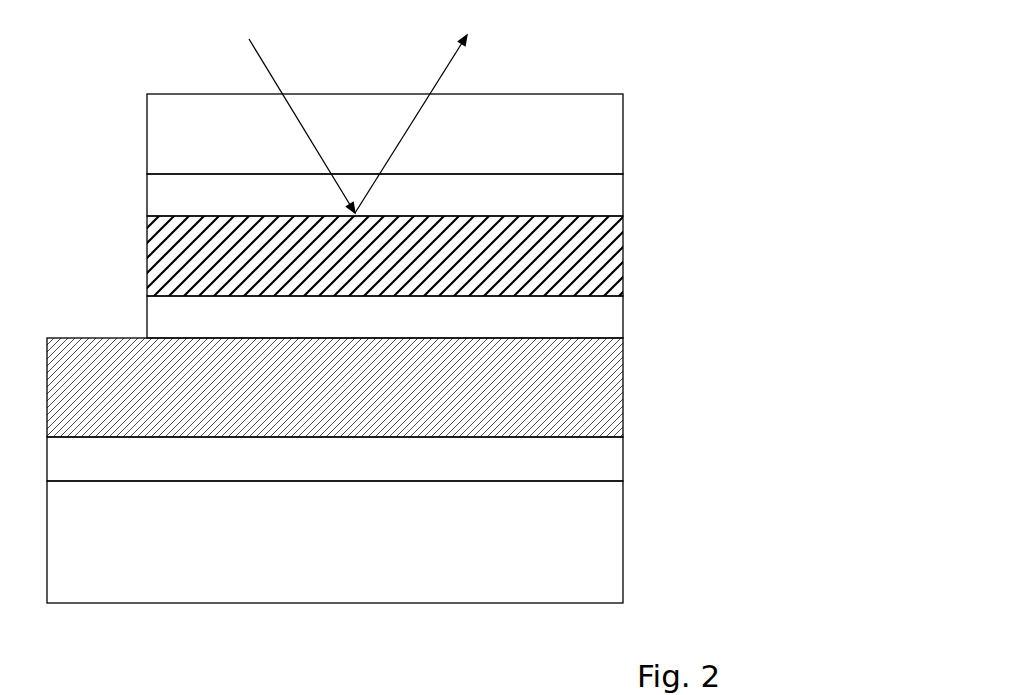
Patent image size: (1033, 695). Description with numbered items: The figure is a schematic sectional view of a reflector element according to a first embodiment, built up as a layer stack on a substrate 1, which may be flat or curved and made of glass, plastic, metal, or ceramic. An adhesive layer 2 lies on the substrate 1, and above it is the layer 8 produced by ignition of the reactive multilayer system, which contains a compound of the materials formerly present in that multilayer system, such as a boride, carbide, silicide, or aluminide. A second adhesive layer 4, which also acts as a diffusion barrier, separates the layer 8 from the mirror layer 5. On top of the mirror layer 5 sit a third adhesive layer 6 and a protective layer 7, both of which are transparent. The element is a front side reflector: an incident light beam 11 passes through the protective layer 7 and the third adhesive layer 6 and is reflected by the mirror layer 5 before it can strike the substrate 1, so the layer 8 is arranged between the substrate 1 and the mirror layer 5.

The substrate 1 is at (600, 548).
The adhesive layer 2 is at (600, 462).
The second adhesive layer 4 is at (600, 318).
The mirror layer 5 is at (600, 247).
The third adhesive layer 6 is at (600, 197).
The protective layer 7 is at (600, 140).
The layer produced by ignition of the reactive multilayer system 8 is at (600, 382).
The incident light beam 11 is at (268, 63).